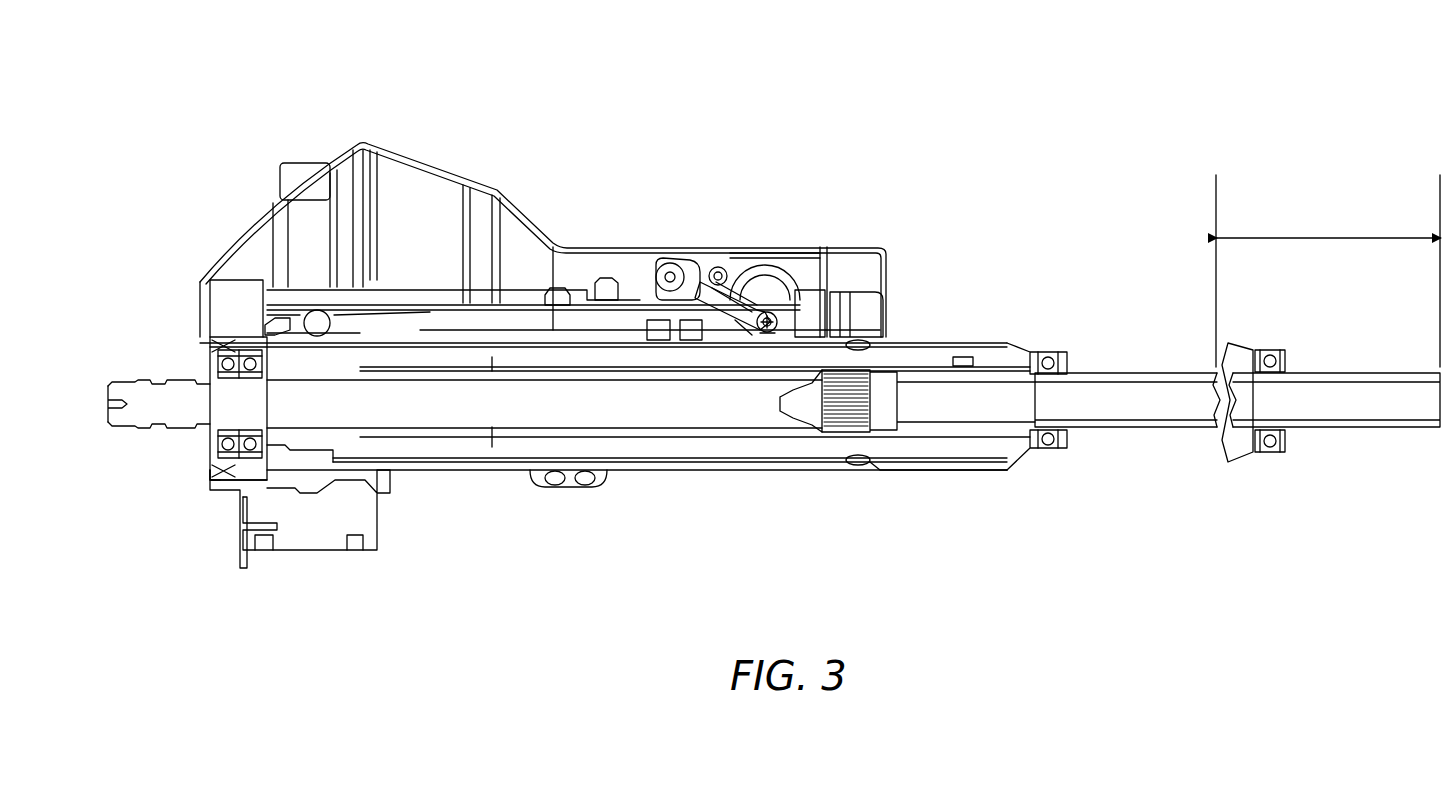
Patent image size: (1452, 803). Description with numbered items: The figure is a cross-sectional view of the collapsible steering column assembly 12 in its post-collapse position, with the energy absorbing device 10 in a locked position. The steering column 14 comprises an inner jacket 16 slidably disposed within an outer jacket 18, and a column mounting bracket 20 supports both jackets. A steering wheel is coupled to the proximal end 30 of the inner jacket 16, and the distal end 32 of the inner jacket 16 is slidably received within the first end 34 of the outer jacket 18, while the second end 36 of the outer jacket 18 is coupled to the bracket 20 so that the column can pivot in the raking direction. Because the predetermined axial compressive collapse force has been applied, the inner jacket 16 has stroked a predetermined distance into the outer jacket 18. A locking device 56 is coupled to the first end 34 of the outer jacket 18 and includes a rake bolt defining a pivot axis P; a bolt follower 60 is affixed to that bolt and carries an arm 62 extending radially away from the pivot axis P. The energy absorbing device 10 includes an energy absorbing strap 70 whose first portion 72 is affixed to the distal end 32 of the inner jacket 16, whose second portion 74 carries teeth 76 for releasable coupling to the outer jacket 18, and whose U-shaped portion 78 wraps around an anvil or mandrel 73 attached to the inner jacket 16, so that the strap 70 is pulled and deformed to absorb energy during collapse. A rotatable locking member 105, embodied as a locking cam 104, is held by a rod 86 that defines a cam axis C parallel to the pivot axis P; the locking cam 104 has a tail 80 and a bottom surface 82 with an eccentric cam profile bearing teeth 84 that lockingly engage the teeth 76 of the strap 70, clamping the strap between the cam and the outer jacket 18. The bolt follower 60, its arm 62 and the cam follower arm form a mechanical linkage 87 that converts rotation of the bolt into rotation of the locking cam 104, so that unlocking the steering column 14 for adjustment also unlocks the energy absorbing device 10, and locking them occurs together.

The collapsible steering column assembly 12 is at (447, 122).
The column mounting bracket 20 is at (498, 188).
The inner jacket 16 is at (1002, 338).
The outer jacket 18 is at (421, 483).
The steering column 14 is at (842, 476).
The proximal end 30 is at (1060, 450).
The first end 34 is at (875, 466).
The distal end 32 is at (267, 443).
The first portion 72 is at (345, 338).
The second end 36 is at (213, 470).
The anvil or mandrel 73 is at (318, 322).
The U-shaped portion 78 is at (275, 332).
The teeth 76 is at (608, 282).
The cam axis C is at (668, 270).
The rod 86 is at (675, 265).
The locking member 105 is at (690, 265).
The locking cam 104 is at (698, 265).
The energy absorbing device 10 is at (718, 258).
The tail 80 is at (740, 292).
The arm 62 is at (758, 310).
The second portion 74 is at (776, 316).
The energy absorbing strap 70 is at (822, 253).
The pivot axis P is at (776, 322).
The bolt follower 60 is at (810, 332).
The bottom surface 82 is at (655, 312).
The teeth 84 is at (712, 323).
The mechanical linkage 87 is at (745, 338).
The locking device 56 is at (767, 334).